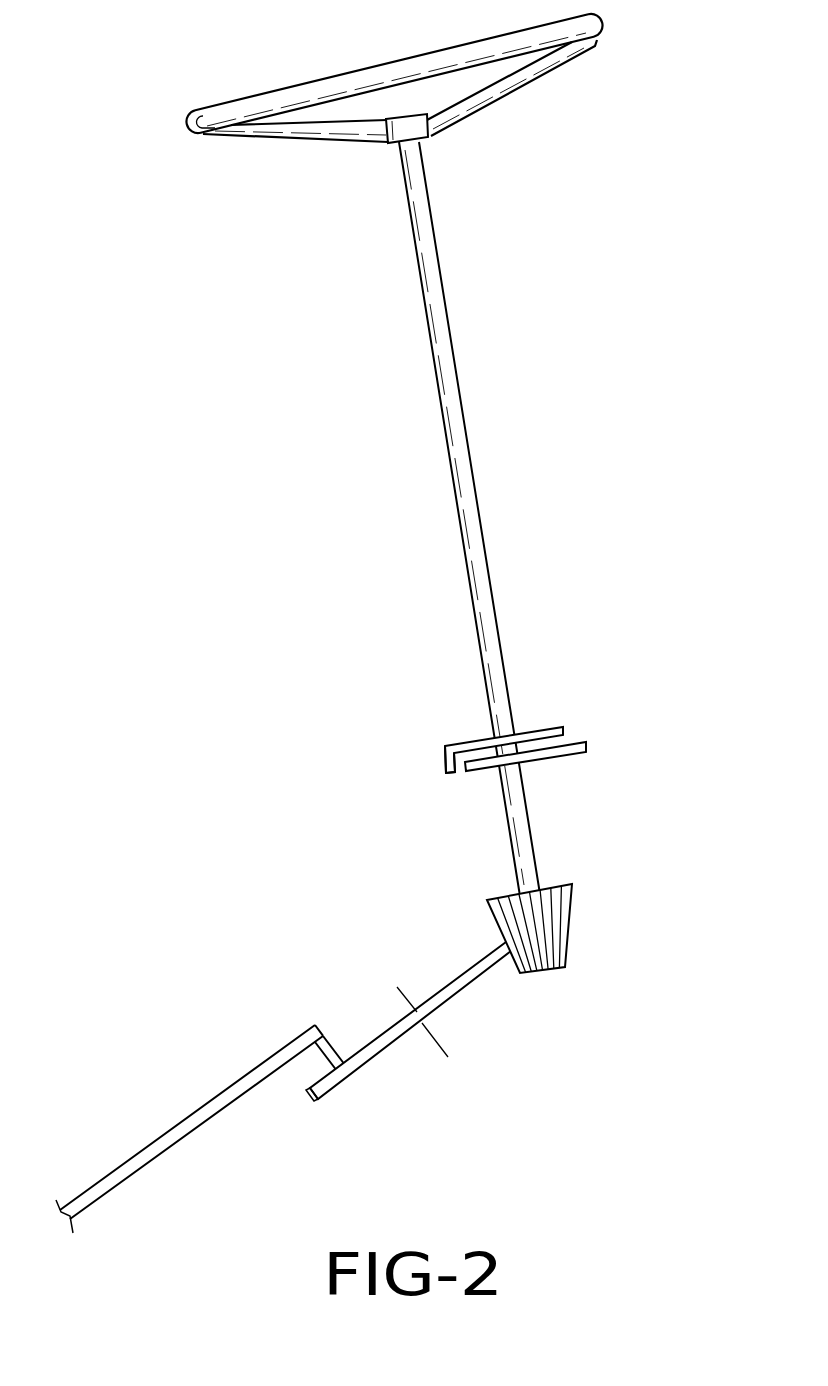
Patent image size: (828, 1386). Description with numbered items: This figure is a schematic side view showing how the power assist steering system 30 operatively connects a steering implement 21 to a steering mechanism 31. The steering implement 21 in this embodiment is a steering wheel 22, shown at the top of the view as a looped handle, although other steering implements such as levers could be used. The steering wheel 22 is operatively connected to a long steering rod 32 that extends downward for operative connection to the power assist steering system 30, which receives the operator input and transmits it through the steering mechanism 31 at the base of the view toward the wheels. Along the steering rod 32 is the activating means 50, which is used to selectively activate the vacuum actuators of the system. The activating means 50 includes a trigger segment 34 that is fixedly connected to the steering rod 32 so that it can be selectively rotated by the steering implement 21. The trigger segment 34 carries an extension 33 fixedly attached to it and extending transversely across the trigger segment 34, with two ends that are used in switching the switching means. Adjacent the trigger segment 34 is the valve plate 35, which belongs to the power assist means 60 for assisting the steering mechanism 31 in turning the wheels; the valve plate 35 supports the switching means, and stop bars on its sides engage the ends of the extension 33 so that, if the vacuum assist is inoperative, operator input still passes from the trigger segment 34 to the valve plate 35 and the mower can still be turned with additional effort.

The steering implement 21 is at (366, 78).
The steering wheel 22 is at (190, 113).
The power assist steering system 30 is at (529, 724).
The steering mechanism 31 is at (450, 1030).
The steering rod 32 is at (450, 358).
The extension 33 is at (440, 767).
The trigger segment 34 is at (565, 726).
The valve plate 35 is at (557, 752).
The activating means 50 is at (409, 503).
The power assist means 60 is at (445, 825).